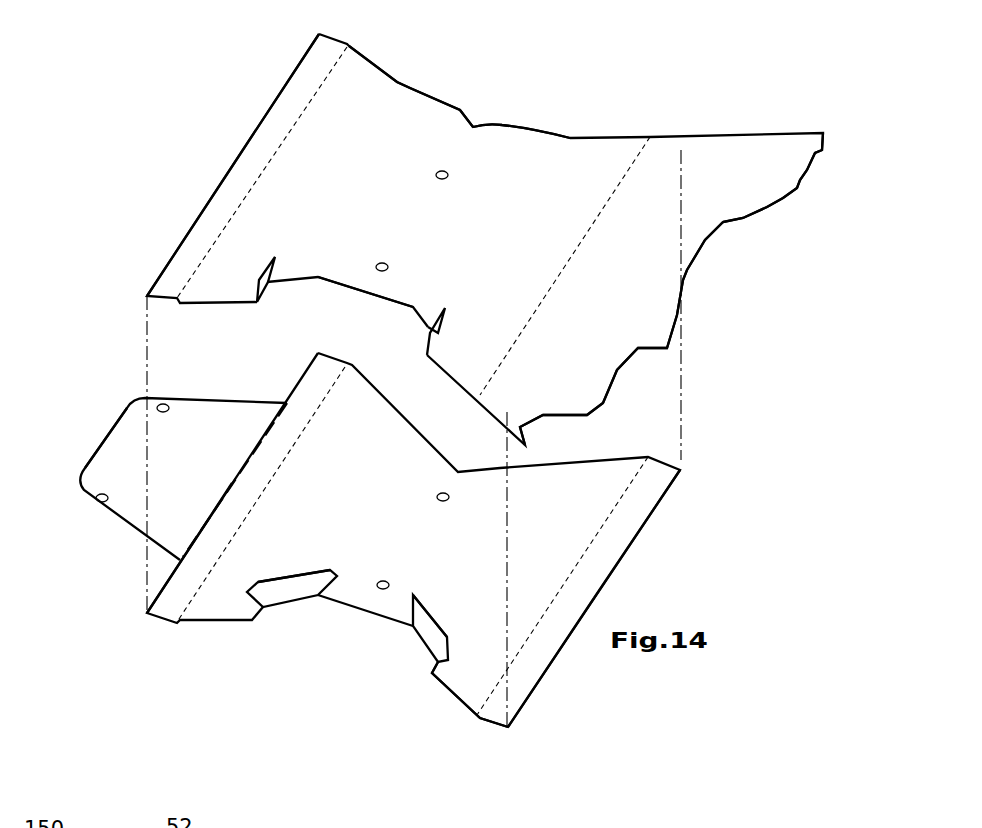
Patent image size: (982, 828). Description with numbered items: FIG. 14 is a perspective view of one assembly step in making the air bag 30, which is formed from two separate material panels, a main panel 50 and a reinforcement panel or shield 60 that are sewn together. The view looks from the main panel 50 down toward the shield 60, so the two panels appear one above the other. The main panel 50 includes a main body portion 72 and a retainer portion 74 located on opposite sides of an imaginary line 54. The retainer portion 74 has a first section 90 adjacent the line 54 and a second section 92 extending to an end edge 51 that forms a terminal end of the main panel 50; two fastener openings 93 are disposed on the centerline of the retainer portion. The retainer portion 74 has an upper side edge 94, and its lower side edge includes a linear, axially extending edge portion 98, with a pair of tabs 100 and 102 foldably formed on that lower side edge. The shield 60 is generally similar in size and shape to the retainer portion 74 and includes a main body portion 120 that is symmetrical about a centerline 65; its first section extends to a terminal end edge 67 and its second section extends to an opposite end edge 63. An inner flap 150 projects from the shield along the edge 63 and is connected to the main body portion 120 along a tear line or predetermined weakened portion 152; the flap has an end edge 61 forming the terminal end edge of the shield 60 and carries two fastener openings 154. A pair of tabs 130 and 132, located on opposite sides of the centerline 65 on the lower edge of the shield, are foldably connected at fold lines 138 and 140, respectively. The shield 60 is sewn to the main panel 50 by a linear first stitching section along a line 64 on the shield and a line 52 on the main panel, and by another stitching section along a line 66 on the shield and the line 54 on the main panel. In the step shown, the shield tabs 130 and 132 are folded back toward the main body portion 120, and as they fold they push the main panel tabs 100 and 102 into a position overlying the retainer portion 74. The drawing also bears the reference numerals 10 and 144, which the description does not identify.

The container blank 10 is at (708, 565).
The air bag 30 is at (720, 502).
The main panel 50 is at (702, 330).
The end edge 51 is at (290, 77).
The line 52 is at (283, 137).
The imaginary line 54 is at (565, 258).
The reinforcement panel or shield 60 is at (558, 690).
The end edge 61 is at (98, 448).
The end edge 63 is at (170, 580).
The line 64 is at (197, 588).
The centerline 65 is at (383, 580).
The line 66 is at (592, 540).
The terminal end edge 67 is at (615, 568).
The main body portion 72 is at (747, 220).
The retainer portion 74 is at (456, 101).
The first section 90 is at (505, 293).
The second section 92 is at (268, 213).
The fastener openings 93 is at (382, 262).
The upper side edge 94 is at (502, 125).
The edge portion 98 is at (353, 287).
The tab 100 is at (427, 330).
The tab 102 is at (267, 283).
The main body portion 120 is at (445, 702).
The tab 130 is at (298, 585).
The tab 132 is at (433, 640).
The fold line 138 is at (418, 637).
The fold line 140 is at (300, 603).
The side wall edge 144 is at (627, 523).
The inner flap 150 is at (132, 512).
The tear line or predetermined weakened portion 152 is at (253, 453).
The fastener openings 154 is at (103, 493).